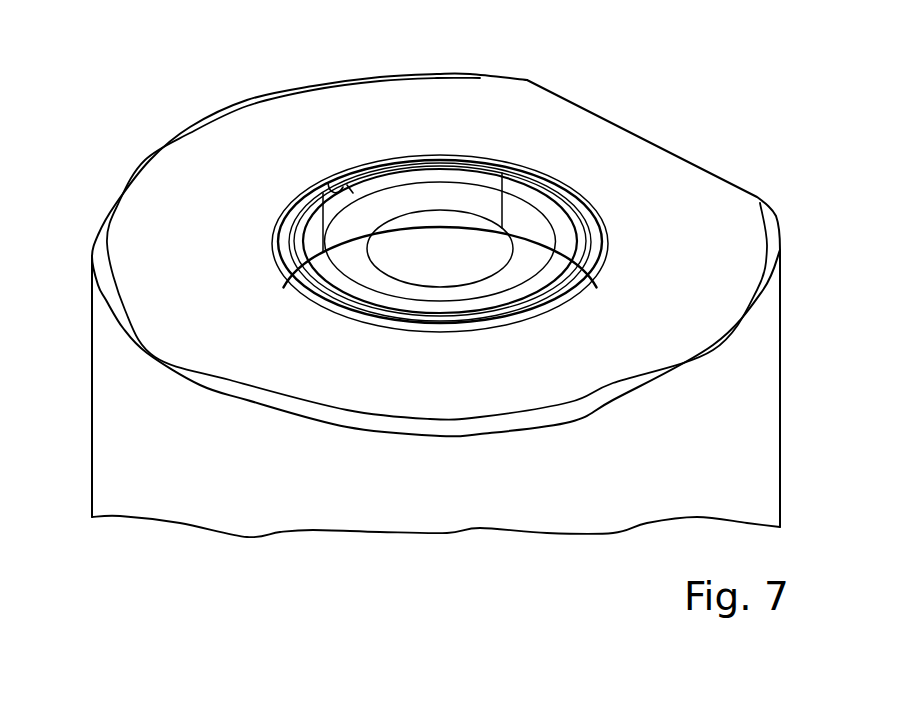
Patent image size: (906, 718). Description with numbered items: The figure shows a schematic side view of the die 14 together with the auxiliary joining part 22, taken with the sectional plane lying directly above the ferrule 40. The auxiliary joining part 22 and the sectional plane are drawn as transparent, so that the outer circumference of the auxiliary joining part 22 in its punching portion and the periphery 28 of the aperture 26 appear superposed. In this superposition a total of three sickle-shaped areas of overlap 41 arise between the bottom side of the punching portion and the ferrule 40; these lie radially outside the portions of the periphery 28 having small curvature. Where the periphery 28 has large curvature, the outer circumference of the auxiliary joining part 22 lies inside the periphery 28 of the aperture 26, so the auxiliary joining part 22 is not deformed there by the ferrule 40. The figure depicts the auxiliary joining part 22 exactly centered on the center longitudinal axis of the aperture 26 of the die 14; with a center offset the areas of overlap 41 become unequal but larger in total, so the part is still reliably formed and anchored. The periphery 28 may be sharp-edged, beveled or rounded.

The die 14 is at (619, 115).
The ferrule 40 is at (577, 202).
The sickle-shaped areas of overlap 41 is at (395, 168).
The auxiliary joining part 22 is at (432, 182).
The aperture 26 is at (465, 248).
The periphery 28 is at (330, 192).